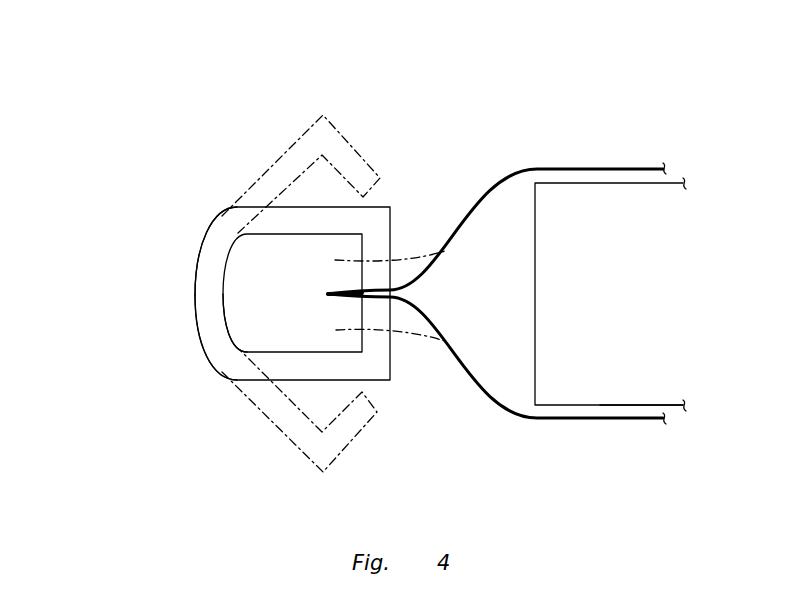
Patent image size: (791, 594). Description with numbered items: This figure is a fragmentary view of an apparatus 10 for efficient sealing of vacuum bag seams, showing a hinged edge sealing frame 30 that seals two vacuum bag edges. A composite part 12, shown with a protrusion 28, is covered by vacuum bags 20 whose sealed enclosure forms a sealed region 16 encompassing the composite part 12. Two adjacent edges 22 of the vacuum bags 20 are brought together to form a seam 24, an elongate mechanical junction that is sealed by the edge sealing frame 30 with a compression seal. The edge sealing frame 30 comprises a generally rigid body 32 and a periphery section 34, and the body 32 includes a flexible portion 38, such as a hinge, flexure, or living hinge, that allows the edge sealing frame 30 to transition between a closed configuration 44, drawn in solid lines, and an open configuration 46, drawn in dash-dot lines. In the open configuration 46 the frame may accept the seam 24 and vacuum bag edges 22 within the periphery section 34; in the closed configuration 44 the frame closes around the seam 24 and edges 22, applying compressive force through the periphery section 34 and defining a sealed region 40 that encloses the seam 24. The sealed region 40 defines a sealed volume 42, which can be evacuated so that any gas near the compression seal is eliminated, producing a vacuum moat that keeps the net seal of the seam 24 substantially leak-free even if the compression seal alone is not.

The apparatus 10 is at (371, 249).
The composite part 12 is at (607, 405).
The sealed region 16 is at (507, 218).
The vacuum bag 20 is at (580, 169).
The vacuum bag edge 22 is at (347, 289).
The seam 24 is at (333, 294).
The protrusion 28 is at (637, 405).
The edge sealing frame 30 is at (210, 232).
The body 32 is at (198, 263).
The periphery section 34 is at (380, 174).
The flexible portion 38 is at (197, 288).
The sealed region 40 is at (234, 302).
The sealed volume 42 is at (238, 322).
The closed configuration 44 is at (95, 263).
The open configuration 46 is at (123, 128).